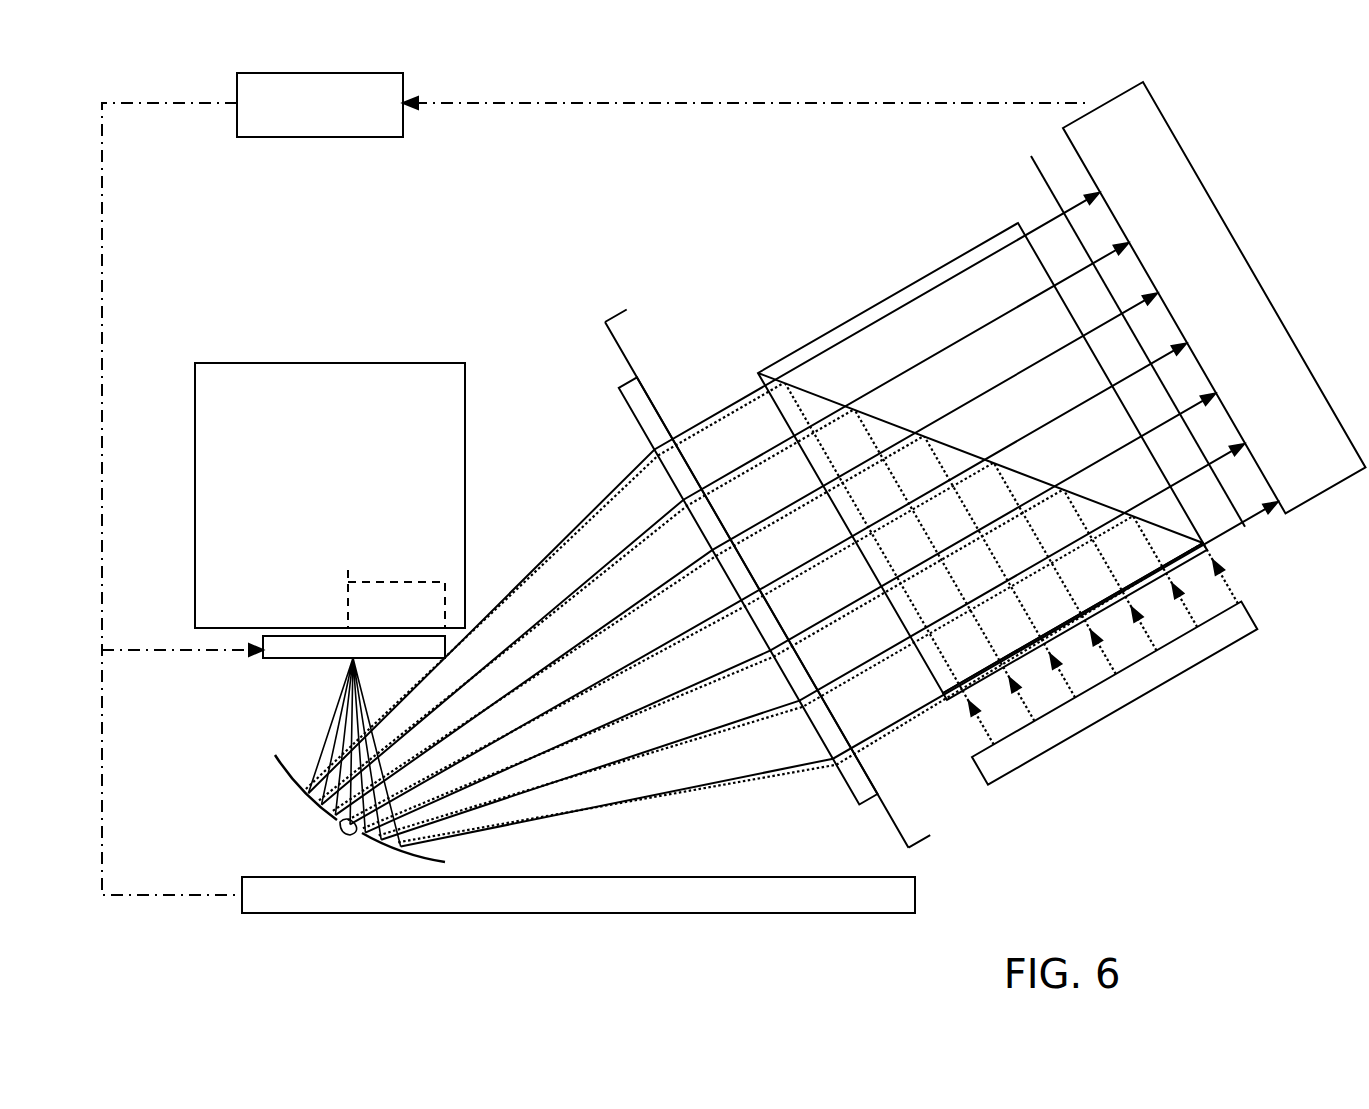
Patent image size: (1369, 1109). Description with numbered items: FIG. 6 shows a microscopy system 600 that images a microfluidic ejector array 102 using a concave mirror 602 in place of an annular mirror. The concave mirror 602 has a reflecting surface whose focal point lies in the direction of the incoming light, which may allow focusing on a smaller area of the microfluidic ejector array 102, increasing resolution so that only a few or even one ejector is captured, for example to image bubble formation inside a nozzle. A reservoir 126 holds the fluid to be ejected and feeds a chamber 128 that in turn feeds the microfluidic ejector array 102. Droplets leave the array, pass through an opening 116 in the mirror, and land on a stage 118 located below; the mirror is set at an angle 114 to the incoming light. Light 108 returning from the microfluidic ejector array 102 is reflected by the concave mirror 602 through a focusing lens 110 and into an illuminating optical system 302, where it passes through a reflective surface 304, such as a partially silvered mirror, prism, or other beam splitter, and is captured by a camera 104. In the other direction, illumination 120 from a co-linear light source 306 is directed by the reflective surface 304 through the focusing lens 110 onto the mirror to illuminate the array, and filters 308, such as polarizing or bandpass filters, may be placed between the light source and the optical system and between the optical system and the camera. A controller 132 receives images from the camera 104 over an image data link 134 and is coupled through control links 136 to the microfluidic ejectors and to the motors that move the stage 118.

The microfluidic ejector array 102 is at (318, 660).
The camera 104 is at (1117, 93).
The light 108 is at (606, 503).
The focusing lens 110 is at (627, 382).
The angle 114 is at (387, 851).
The opening 116 is at (347, 836).
The stage 118 is at (916, 892).
The illumination 120 is at (586, 506).
The reservoir 126 is at (331, 362).
The chamber 128 is at (386, 582).
The controller 132 is at (275, 138).
The image data link 134 is at (648, 105).
The control links 136 is at (102, 196).
The illuminating optical system 302 is at (887, 298).
The reflective surface 304 is at (810, 393).
The co-linear light source 306 is at (1102, 727).
The filters 308 is at (1237, 507).
The microscopy system 600 is at (1063, 929).
The concave mirror 602 is at (298, 770).